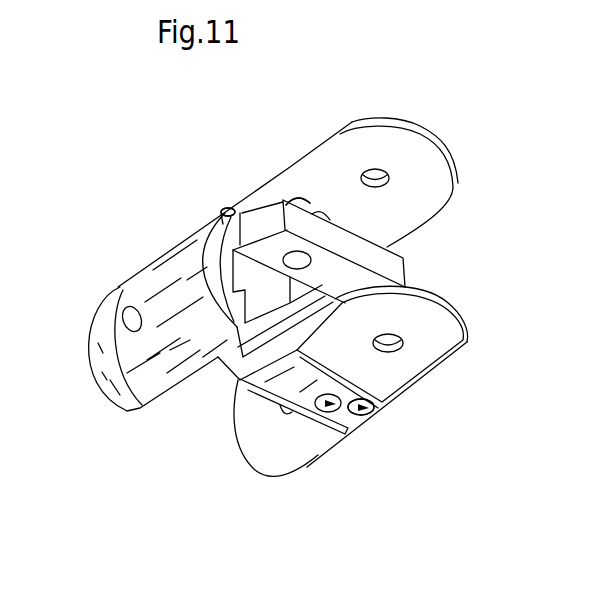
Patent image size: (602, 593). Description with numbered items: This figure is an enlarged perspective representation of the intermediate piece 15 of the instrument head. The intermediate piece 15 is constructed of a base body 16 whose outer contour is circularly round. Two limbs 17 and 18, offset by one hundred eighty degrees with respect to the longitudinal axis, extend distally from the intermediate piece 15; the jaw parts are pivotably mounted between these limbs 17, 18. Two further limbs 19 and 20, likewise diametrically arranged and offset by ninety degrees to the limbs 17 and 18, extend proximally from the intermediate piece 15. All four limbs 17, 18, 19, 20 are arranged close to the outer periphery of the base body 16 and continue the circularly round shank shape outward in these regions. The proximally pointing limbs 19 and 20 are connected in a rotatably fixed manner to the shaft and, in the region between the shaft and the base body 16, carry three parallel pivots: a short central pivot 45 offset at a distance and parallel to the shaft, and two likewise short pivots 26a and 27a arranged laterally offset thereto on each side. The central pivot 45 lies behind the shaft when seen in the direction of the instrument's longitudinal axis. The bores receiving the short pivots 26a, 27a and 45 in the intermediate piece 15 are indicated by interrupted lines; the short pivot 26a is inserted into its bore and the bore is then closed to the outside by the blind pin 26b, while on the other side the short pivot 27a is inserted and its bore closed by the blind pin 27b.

The intermediate piece 15 is at (140, 234).
The base body 16 is at (240, 383).
The limb 17 is at (166, 378).
The limb 18 is at (320, 443).
The limb 19 is at (412, 158).
The limb 20 is at (410, 313).
The short pivot 26a is at (382, 412).
The blind pin 26b is at (361, 407).
The short pivot 27a is at (298, 190).
The blind pin 27b is at (265, 207).
The short pivot 45 is at (348, 414).